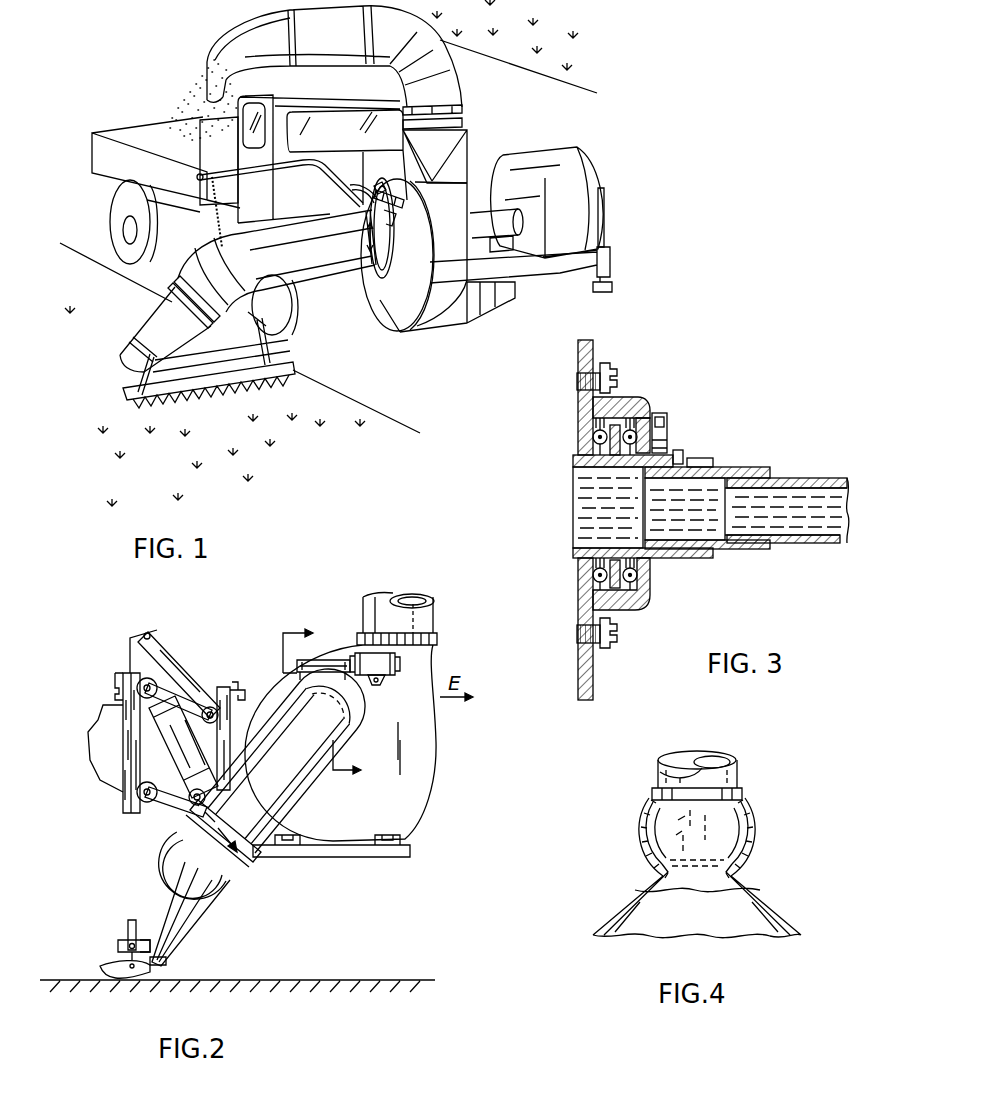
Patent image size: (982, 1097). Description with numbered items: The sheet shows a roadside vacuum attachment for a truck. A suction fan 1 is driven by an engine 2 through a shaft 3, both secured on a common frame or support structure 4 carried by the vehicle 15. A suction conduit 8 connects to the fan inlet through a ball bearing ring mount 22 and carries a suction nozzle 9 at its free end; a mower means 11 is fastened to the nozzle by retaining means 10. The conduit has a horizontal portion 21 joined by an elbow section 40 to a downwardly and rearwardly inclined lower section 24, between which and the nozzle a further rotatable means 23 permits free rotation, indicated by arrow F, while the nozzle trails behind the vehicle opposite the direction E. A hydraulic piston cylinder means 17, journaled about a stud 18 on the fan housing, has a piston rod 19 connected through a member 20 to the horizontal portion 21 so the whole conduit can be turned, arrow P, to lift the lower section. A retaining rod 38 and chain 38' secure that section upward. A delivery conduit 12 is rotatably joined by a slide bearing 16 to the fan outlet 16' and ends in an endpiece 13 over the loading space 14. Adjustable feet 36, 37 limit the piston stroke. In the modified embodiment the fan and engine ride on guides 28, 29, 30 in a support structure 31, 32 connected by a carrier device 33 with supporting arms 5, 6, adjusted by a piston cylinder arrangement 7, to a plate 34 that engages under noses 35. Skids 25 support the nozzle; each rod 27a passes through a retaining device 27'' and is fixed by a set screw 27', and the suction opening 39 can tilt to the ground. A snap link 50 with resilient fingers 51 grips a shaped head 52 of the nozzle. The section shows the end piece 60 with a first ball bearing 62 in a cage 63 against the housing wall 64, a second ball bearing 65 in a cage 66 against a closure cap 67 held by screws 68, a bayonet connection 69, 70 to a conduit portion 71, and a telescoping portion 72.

In FIG. 1, the suction fan 1 is at (392, 307).
In FIG. 2, the suction fan 1 is at (417, 764).
In FIG. 1, the engine 2 is at (505, 162).
In FIG. 1, the shaft 3 is at (510, 236).
In FIG. 2, the shaft 3 is at (329, 694).
In FIG. 1, the common frame or support structure 4 is at (572, 263).
In FIG. 2, the supporting arm 5 is at (200, 702).
In FIG. 2, the supporting arm 6 is at (173, 806).
In FIG. 2, the hydraulic or pneumatic piston cylinder arrangement 7 is at (176, 760).
In FIG. 1, the suction conduit 8 is at (322, 291).
In FIG. 3, the suction conduit 8 is at (778, 436).
In FIG. 1, the suction nozzle 9 is at (139, 333).
In FIG. 2, the suction nozzle 9 is at (181, 931).
In FIG. 4, the suction nozzle 9 is at (762, 912).
In FIG. 1, the retaining means 10 is at (214, 353).
In FIG. 1, the mower means 11 is at (207, 386).
In FIG. 1, the delivery conduit 12 is at (447, 83).
In FIG. 1, the endpiece 13 is at (222, 46).
In FIG. 1, the loading space 14 is at (128, 134).
In FIG. 1, the vehicle 15 is at (98, 197).
In FIG. 1, the slide bearing 16 is at (450, 116).
In FIG. 1, the outlet 16' is at (435, 205).
In FIG. 1, the hydraulic piston cylinder means 17 is at (404, 205).
In FIG. 2, the hydraulic piston cylinder means 17 is at (400, 660).
In FIG. 1, the stud 18 is at (390, 228).
In FIG. 2, the stud 18 is at (375, 680).
In FIG. 1, the piston rod 19 is at (382, 192).
In FIG. 2, the piston rod 19 is at (333, 657).
In FIG. 3, the piston rod 19 is at (667, 414).
In FIG. 1, the member 20 is at (358, 197).
In FIG. 2, the member 20 is at (300, 672).
In FIG. 3, the member 20 is at (668, 438).
In FIG. 1, the horizontal portion 21 is at (340, 263).
In FIG. 1, the ball bearing ring mount 22 is at (374, 272).
In FIG. 3, the ball bearing ring mount 22 is at (667, 395).
In FIG. 1, the further rotatable means 23 is at (168, 300).
In FIG. 2, the further rotatable means 23 is at (249, 856).
In FIG. 4, the further rotatable means 23 is at (743, 794).
In FIG. 1, the lower section 24 is at (174, 280).
In FIG. 2, the lower section 24 is at (296, 796).
In FIG. 4, the lower section 24 is at (738, 772).
In FIG. 2, the skid 25 is at (103, 965).
In FIG. 2, the rod 27a is at (131, 926).
In FIG. 2, the set screw 27' is at (106, 940).
In FIG. 2, the retaining device 27'' is at (142, 916).
In FIG. 2, the guide 28 is at (404, 833).
In FIG. 2, the guide 29 is at (286, 848).
In FIG. 2, the guide 30 is at (247, 688).
In FIG. 2, the support structure 31 is at (364, 850).
In FIG. 2, the support structure 32 is at (222, 684).
In FIG. 2, the carrier device 33 is at (131, 768).
In FIG. 2, the plate 34 is at (123, 724).
In FIG. 2, the noses 35 is at (120, 687).
In FIG. 1, the foot 36 is at (604, 207).
In FIG. 1, the foot 37 is at (467, 318).
In FIG. 1, the retaining rod 38 is at (280, 173).
In FIG. 1, the chain 38' is at (201, 212).
In FIG. 2, the suction opening 39 is at (160, 963).
In FIG. 1, the elbow section 40 is at (247, 264).
In FIG. 2, the snap link 50 is at (240, 880).
In FIG. 4, the snap link 50 is at (761, 831).
In FIG. 4, the resilient fingers 51 is at (647, 812).
In FIG. 4, the shaped head 52 is at (664, 844).
In FIG. 3, the end piece 60 is at (600, 463).
In FIG. 3, the first ball bearing 62 is at (598, 438).
In FIG. 3, the cage 63 is at (598, 588).
In FIG. 3, the housing wall 64 is at (579, 413).
In FIG. 3, the second ball bearing 65 is at (637, 572).
In FIG. 3, the cage 66 is at (647, 596).
In FIG. 3, the closure cap 67 is at (633, 611).
In FIG. 3, the screws 68 is at (607, 380).
In FIG. 3, the bayonet connection 69 is at (683, 453).
In FIG. 3, the bayonet connection 70 is at (713, 460).
In FIG. 3, the conduit portion 71 is at (702, 478).
In FIG. 3, the conduit portion 72 is at (800, 478).